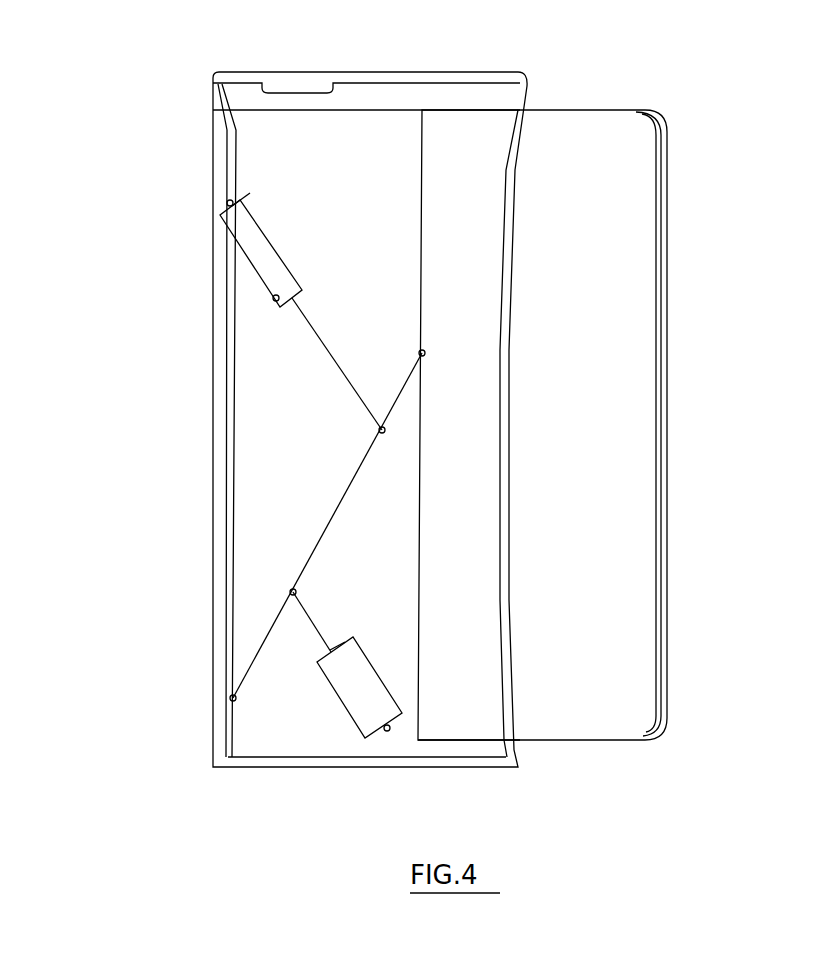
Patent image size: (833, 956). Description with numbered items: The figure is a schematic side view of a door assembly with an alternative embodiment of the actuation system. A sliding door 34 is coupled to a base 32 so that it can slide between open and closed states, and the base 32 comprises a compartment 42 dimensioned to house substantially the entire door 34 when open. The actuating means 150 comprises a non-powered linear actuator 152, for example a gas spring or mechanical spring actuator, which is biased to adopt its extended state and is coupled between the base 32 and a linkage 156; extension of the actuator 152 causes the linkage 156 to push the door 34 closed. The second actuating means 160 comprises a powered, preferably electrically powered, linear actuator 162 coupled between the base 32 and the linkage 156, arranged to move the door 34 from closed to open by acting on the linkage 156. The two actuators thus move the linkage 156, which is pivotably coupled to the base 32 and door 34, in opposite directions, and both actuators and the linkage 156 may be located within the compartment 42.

The base 32 is at (524, 66).
The door 34 is at (669, 138).
The compartment 42 is at (520, 751).
The actuating means 150 is at (266, 304).
The linear actuator 152 is at (270, 240).
The linkage 156 is at (312, 547).
The second actuating means 160 is at (357, 609).
The linear actuator 162 is at (342, 700).